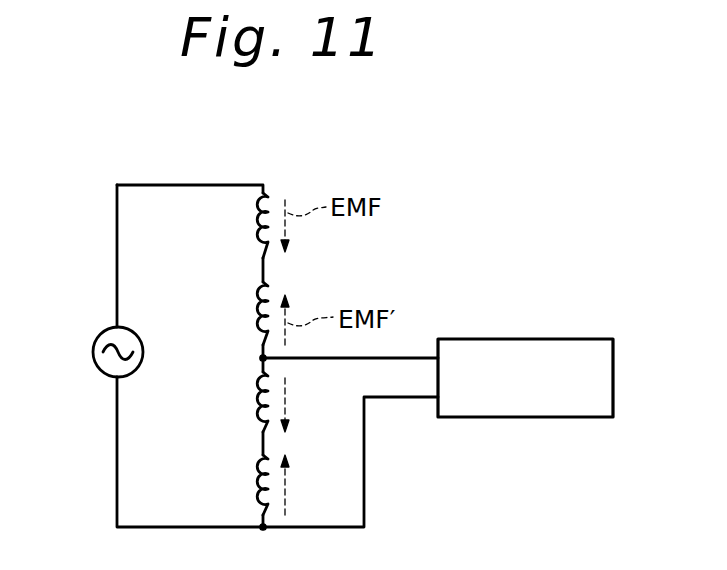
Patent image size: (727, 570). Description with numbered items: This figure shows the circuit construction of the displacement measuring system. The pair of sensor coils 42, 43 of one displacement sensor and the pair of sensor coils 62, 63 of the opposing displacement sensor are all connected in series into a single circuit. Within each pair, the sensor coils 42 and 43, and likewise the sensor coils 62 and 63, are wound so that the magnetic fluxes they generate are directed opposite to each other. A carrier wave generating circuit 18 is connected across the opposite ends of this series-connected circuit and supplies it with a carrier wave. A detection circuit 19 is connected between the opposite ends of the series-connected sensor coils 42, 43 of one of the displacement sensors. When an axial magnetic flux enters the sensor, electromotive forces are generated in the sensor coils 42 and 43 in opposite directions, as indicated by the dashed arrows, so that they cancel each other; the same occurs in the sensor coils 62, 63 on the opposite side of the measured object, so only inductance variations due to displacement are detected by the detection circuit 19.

The carrier wave generating circuit 18 is at (112, 334).
The detection circuit 19 is at (573, 338).
The sensor coil 42 is at (268, 192).
The sensor coil 43 is at (273, 277).
The sensor coil 62 is at (265, 384).
The sensor coil 63 is at (266, 464).